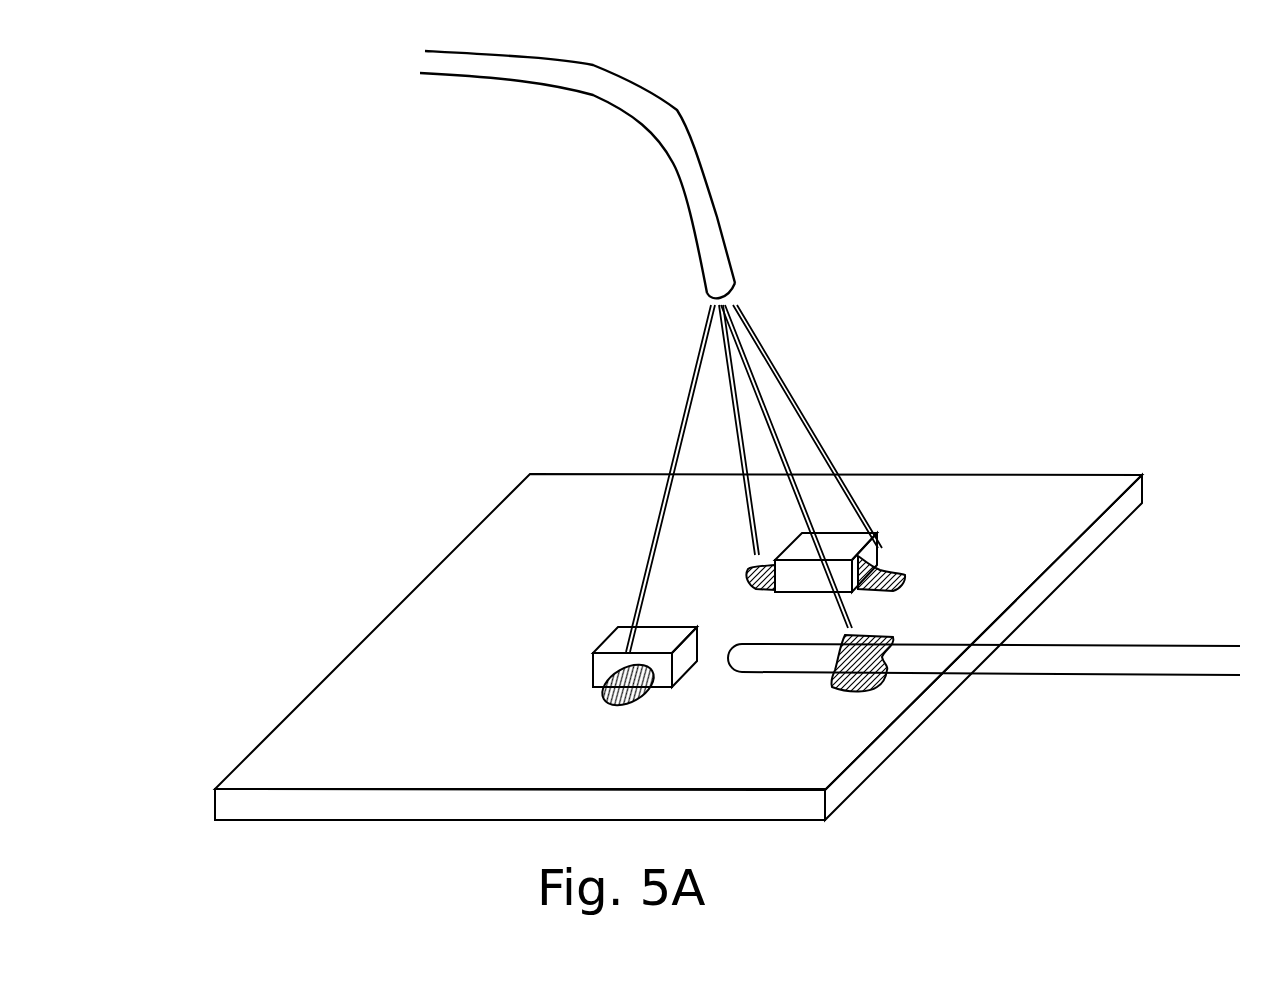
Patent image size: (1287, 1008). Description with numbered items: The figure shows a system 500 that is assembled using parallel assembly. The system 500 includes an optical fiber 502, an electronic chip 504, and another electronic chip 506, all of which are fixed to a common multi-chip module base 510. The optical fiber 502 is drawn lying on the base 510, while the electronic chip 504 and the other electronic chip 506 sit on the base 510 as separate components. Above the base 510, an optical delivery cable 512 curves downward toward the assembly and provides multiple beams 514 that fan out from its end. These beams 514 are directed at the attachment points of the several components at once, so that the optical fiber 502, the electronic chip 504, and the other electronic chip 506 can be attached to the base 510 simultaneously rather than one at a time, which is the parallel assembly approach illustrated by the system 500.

The system 500 is at (698, 469).
The optical fiber 502 is at (1095, 627).
The electronic chip 504 is at (882, 518).
The another electronic chip 506 is at (611, 622).
The multi-chip module base 510 is at (250, 832).
The optical delivery cable 512 is at (680, 107).
The beams 514 is at (785, 365).